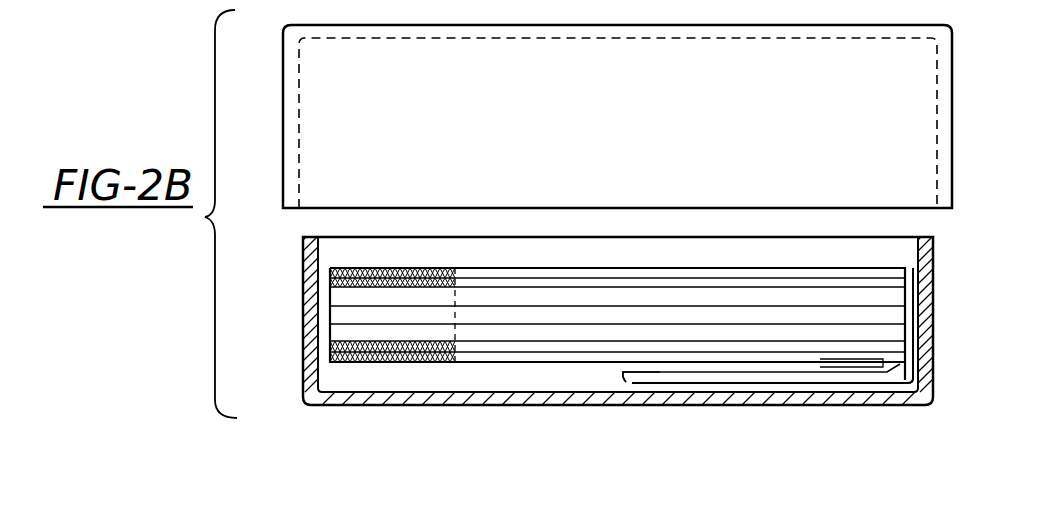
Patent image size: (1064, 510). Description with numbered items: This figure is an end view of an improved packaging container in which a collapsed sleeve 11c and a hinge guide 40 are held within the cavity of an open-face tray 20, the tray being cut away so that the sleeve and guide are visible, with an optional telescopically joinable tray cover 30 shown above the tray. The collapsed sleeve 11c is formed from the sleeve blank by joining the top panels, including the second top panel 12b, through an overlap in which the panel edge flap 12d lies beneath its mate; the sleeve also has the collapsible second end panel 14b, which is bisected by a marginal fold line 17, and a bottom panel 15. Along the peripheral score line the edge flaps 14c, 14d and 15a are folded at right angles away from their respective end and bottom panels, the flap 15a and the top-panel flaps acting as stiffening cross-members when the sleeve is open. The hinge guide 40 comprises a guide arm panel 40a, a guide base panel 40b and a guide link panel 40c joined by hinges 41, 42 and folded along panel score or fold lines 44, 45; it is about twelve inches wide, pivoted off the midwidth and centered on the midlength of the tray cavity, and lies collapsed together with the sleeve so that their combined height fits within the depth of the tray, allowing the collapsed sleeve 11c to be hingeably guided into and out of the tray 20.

The tray cover 30 is at (955, 135).
The open-face tray 20 is at (927, 297).
The collapsed sleeve 11c is at (773, 318).
The second top panel 12b is at (619, 273).
The panel edge flap 12d is at (397, 270).
The second end panel 14b is at (667, 286).
The panel edge flap 14c is at (358, 340).
The panel edge flap 14d is at (355, 288).
The bottom panel 15 is at (598, 352).
The panel edge flap 15a is at (385, 362).
The marginal fold line 17 is at (378, 322).
The hinge guide 40 is at (730, 385).
The guide arm panel 40a is at (883, 365).
The guide base panel 40b is at (780, 390).
The guide link panel 40c is at (845, 385).
The hinge 41 is at (623, 372).
The hinge 42 is at (912, 362).
The panel score/fold line 44 is at (637, 383).
The panel score/fold line 45 is at (880, 385).